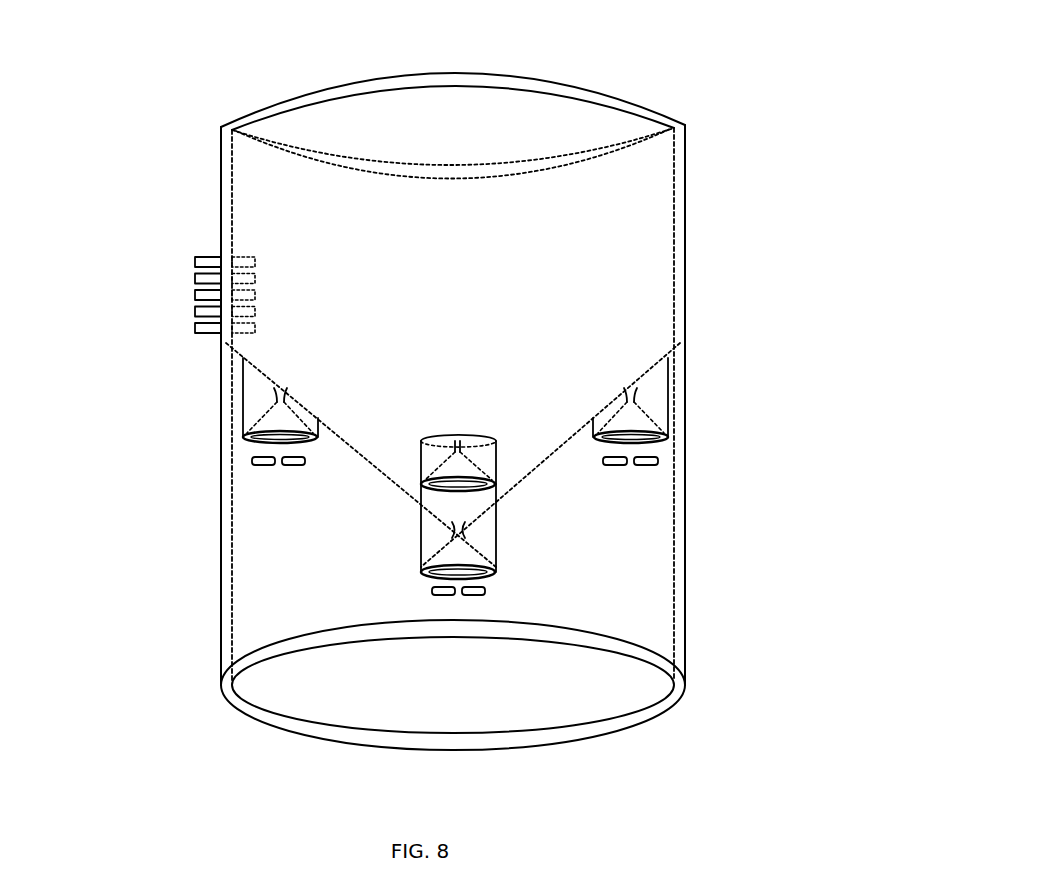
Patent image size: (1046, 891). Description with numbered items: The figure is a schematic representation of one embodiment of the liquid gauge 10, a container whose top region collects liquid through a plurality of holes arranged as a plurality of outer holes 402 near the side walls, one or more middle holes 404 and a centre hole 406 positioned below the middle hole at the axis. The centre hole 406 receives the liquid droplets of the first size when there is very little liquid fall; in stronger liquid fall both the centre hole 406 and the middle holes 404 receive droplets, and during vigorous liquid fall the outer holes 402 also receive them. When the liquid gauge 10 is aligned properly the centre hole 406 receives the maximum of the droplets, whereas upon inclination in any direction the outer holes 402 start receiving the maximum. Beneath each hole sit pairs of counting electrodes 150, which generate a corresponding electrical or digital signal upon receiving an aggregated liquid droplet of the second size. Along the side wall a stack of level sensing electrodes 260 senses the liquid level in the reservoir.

The liquid gauge 10 is at (533, 70).
The level sensing electrodes 260 is at (193, 292).
The outer holes 402 is at (609, 386).
The middle holes 404 is at (436, 438).
The centre hole 406 is at (497, 541).
The counting electrodes 150 is at (269, 470).